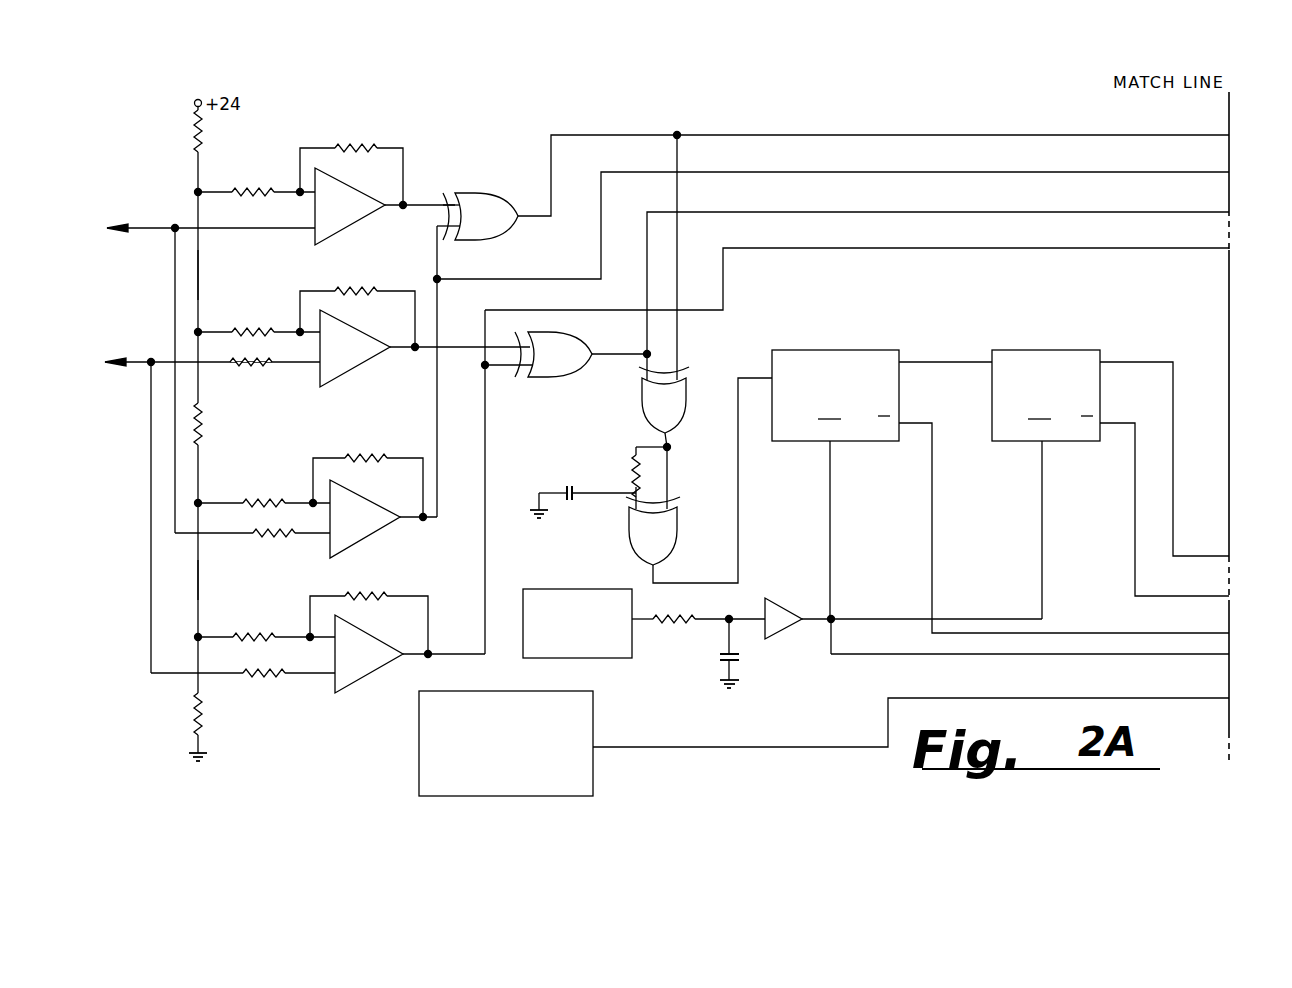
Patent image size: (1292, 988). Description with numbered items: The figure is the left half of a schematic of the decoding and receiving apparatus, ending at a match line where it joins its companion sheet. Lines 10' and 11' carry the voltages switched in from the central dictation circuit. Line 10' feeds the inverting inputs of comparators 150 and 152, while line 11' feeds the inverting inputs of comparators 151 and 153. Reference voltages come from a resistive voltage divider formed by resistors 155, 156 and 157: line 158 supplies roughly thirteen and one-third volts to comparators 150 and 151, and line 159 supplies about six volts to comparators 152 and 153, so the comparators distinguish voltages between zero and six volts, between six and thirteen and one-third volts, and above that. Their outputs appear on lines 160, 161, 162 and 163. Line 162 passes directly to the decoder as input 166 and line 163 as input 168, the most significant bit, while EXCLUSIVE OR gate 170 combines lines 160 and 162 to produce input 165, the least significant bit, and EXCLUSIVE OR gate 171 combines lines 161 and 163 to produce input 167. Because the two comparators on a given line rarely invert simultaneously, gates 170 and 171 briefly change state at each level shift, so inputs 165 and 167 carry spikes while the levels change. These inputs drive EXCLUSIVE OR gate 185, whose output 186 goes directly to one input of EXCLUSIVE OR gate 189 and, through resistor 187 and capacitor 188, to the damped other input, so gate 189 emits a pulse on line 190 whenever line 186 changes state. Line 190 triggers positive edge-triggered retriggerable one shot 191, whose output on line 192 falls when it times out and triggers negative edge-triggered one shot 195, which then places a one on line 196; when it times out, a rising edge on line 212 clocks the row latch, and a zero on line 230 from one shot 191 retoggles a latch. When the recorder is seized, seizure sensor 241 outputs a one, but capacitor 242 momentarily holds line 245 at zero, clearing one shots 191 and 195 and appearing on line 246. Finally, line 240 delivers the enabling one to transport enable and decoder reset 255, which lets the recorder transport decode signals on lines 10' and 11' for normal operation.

The line 10' is at (211, 351).
The line 11' is at (212, 487).
The comparator 150 is at (355, 236).
The comparator 151 is at (361, 374).
The comparator 152 is at (371, 546).
The comparator 153 is at (366, 691).
The resistor 155 is at (194, 132).
The resistor 156 is at (205, 408).
The resistor 157 is at (194, 714).
The line 158 is at (200, 283).
The line 159 is at (200, 588).
The line 160 is at (415, 211).
The line 161 is at (417, 354).
The line 162 is at (444, 542).
The line 163 is at (458, 658).
The input 165 is at (890, 133).
The input 166 is at (882, 169).
The input 167 is at (882, 212).
The input 168 is at (890, 248).
The EXCLUSIVE OR gate 170 is at (487, 190).
The EXCLUSIVE OR gate 171 is at (548, 382).
The EXCLUSIVE OR gate 185 is at (689, 388).
The output 186 is at (670, 468).
The resistor 187 is at (631, 460).
The capacitor 188 is at (568, 489).
The EXCLUSIVE OR gate 189 is at (630, 540).
The line 190 is at (660, 568).
The one shot 191 is at (825, 350).
The line 192 is at (930, 362).
The one shot 195 is at (1038, 350).
The line 196 is at (1202, 556).
The line 212 is at (1171, 596).
The line 230 is at (1092, 633).
The line 240 is at (911, 698).
The seizure sensor 241 is at (610, 658).
The capacitor 242 is at (722, 662).
The line 245 is at (812, 624).
The line 246 is at (1104, 655).
The transport enable and decoder reset 255 is at (418, 748).